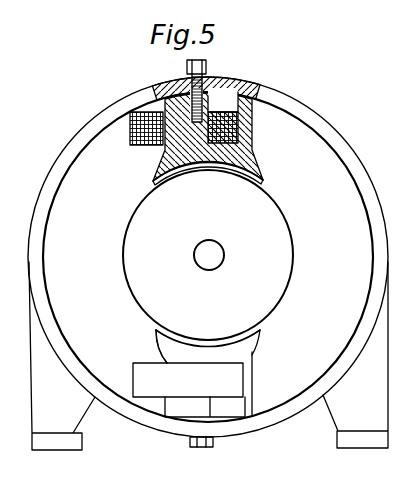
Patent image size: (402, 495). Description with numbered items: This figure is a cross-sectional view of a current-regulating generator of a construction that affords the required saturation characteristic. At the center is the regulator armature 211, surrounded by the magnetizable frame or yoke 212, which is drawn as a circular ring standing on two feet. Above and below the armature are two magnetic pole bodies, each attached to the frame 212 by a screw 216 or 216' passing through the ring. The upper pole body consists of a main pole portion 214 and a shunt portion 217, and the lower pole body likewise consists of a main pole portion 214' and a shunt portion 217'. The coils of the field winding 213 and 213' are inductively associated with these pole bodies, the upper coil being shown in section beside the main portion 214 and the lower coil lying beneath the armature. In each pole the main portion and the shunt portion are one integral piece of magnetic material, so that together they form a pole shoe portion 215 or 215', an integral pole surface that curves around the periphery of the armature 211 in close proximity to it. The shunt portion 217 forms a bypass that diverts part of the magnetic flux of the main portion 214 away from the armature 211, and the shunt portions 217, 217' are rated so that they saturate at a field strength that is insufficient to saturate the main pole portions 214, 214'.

The regulator armature 211 is at (290, 249).
The magnetizable frame or yoke 212 is at (340, 138).
The coil of the field winding 213 is at (250, 127).
The coil of the field winding 213' is at (172, 390).
The main pole portion 214 is at (150, 140).
The main pole portion 214' is at (150, 346).
The pole shoe portion 215 is at (208, 178).
The pole shoe portion 215' is at (208, 341).
The screw 216 is at (220, 90).
The screw 216' is at (225, 444).
The shunt portion 217 is at (225, 134).
The shunt portion 217' is at (278, 377).